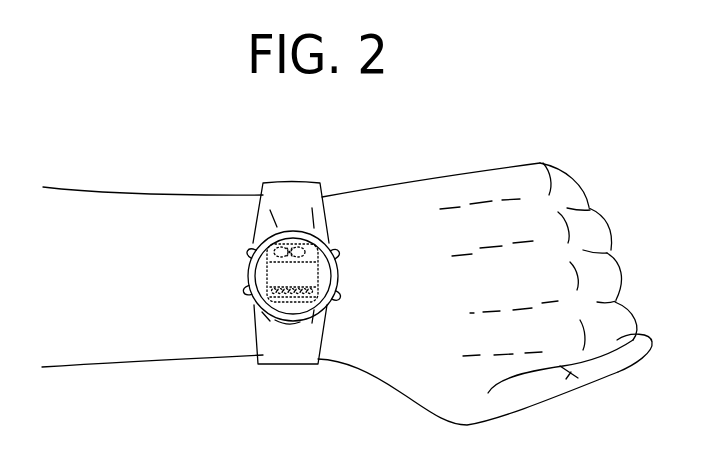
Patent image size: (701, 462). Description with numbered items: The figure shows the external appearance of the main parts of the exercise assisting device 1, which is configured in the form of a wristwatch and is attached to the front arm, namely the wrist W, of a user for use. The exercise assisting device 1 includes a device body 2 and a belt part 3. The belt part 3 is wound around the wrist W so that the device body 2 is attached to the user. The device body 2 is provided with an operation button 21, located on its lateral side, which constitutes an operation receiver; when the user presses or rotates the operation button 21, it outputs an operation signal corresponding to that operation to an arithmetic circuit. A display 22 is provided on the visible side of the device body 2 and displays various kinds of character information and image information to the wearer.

The exercise assisting device 1 is at (287, 262).
The device body 2 is at (287, 285).
The operation button 21 is at (343, 300).
The display 22 is at (246, 279).
The belt part 3 is at (300, 366).
The wrist W is at (250, 364).